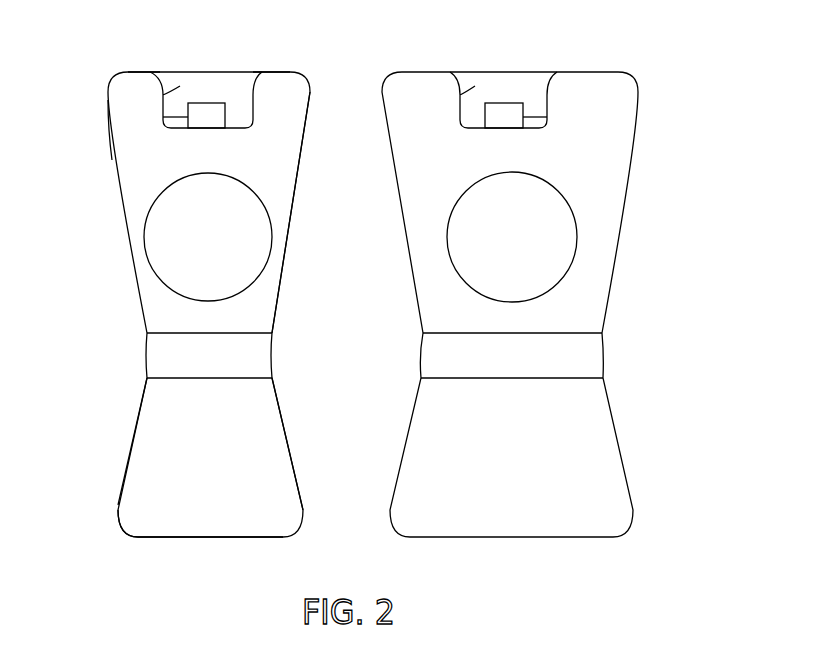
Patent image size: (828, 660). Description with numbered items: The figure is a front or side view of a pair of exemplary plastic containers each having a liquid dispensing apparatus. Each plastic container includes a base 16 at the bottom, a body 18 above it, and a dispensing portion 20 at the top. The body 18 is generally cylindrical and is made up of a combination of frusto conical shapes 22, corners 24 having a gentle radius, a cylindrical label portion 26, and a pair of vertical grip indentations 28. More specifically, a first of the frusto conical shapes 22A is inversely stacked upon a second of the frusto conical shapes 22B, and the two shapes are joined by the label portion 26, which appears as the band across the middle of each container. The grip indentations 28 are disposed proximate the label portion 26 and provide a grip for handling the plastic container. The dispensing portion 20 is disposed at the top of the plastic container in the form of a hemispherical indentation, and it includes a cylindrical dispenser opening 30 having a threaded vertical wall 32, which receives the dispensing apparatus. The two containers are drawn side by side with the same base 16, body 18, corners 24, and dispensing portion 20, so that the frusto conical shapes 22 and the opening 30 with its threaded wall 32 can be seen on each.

The base 16 is at (207, 537).
The body 18 is at (130, 207).
The dispensing portion 20 is at (180, 86).
The frusto conical shapes 22 is at (387, 130).
The first frusto conical shape 22A is at (110, 147).
The second frusto conical shape 22B is at (128, 448).
The corners 24 is at (140, 72).
The cylindrical label portion 26 is at (208, 237).
The vertical grip indentations 28 is at (423, 355).
The cylindrical dispenser opening 30 is at (207, 103).
The threaded vertical wall 32 is at (188, 117).